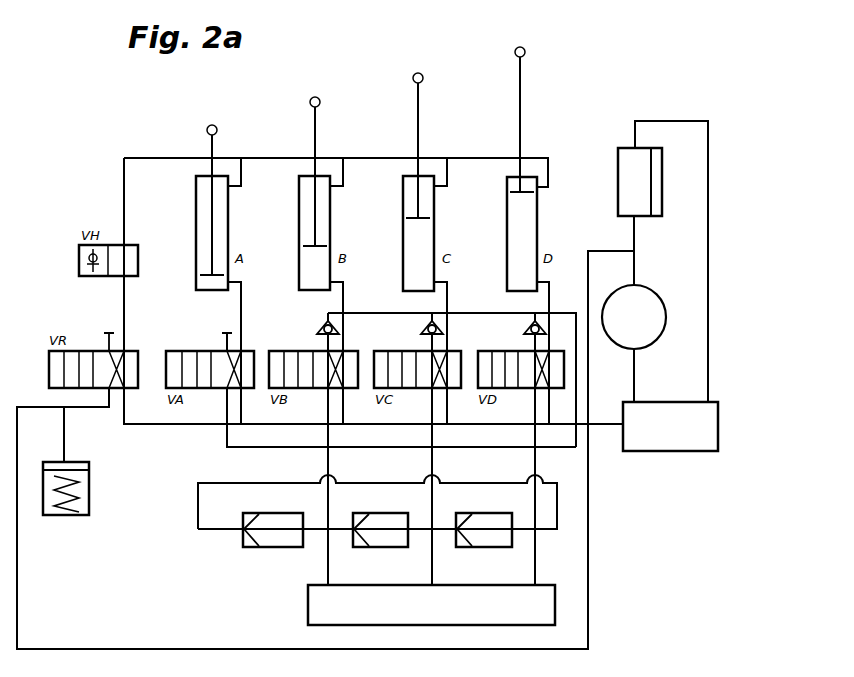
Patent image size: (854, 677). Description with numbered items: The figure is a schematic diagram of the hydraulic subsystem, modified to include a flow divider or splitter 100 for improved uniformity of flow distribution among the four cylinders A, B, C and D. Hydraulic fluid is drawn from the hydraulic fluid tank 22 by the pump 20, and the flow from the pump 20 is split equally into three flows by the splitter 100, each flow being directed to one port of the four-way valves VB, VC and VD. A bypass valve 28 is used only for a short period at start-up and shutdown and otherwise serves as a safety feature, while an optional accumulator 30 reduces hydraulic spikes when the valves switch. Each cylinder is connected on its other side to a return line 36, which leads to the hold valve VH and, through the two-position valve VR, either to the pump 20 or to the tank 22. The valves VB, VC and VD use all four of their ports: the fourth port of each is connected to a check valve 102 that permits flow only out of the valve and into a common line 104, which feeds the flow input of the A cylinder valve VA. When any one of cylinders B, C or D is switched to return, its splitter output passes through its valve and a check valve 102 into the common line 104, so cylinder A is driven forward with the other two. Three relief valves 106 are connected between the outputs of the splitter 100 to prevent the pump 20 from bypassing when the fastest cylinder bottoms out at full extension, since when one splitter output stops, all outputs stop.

The return line 36 is at (375, 157).
The common line 104 is at (366, 313).
The bypass valve 28 is at (618, 193).
The pump 20 is at (652, 291).
The hydraulic fluid tank 22 is at (665, 452).
The accumulator 30 is at (91, 478).
The check valve 102 is at (524, 330).
The relief valves 106 is at (505, 513).
The flow divider or splitter 100 is at (308, 612).